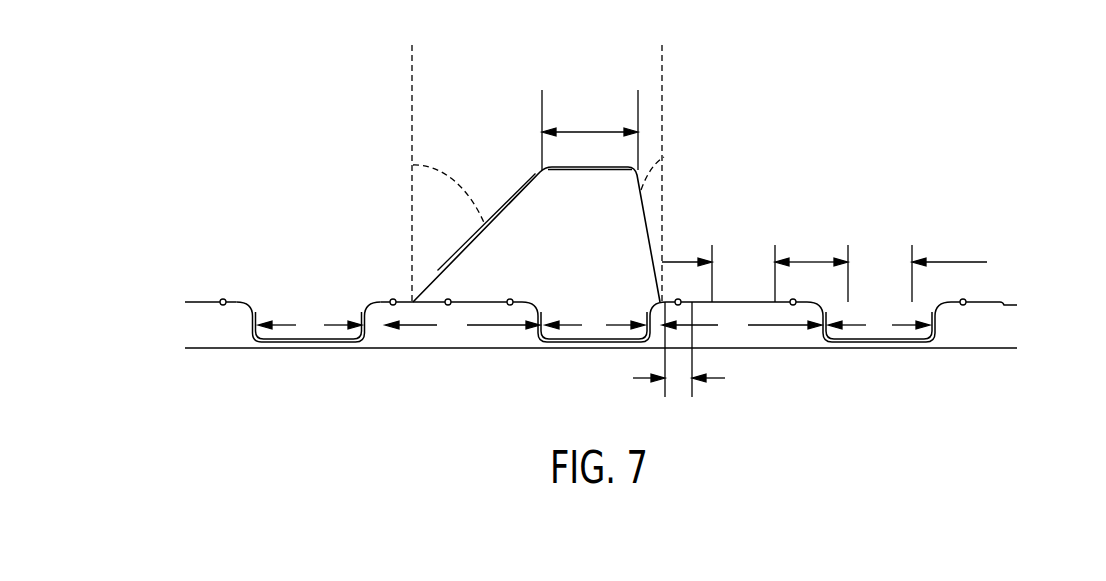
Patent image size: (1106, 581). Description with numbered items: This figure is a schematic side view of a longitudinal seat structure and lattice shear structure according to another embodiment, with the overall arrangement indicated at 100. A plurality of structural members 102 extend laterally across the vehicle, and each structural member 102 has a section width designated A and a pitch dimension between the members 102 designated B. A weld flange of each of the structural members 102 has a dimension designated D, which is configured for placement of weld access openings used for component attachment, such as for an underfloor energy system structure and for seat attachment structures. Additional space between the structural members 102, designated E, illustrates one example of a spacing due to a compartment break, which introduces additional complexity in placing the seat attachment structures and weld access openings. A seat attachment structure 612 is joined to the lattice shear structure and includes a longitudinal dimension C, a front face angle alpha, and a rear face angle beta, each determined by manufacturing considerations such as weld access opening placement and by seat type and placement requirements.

The structured substrate assembly 100 is at (143, 72).
The structural member 102 is at (290, 345).
The seat attachment structure 612 is at (651, 258).